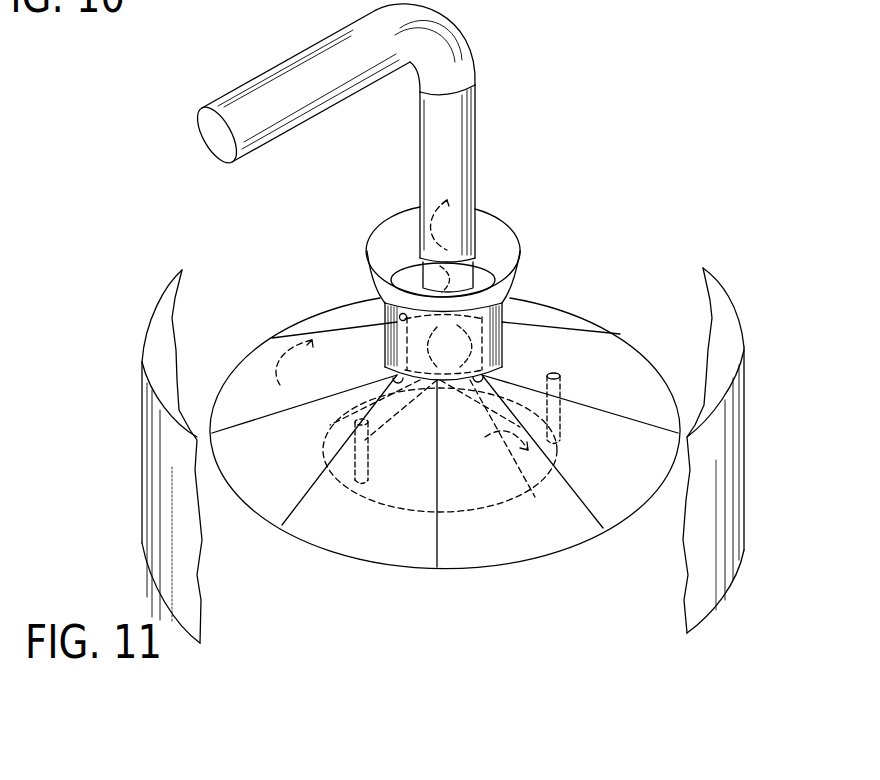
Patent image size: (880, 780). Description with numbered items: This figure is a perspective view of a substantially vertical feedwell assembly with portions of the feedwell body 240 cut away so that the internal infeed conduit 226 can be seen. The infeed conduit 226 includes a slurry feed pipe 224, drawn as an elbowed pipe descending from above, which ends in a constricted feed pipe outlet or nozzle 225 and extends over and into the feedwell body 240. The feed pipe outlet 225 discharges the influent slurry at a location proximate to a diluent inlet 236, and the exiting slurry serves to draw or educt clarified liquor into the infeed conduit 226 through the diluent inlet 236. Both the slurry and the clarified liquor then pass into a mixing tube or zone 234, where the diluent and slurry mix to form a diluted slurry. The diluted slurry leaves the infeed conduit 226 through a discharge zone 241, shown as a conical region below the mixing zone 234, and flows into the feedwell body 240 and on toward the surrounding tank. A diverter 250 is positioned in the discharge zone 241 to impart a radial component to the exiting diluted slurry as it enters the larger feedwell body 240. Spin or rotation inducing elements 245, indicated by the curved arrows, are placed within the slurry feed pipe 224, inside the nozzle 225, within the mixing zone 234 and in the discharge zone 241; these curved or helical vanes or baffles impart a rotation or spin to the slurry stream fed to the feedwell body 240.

The slurry feed pipe 224 is at (475, 52).
The infeed conduit 226 is at (467, 235).
The diluent inlet 236 is at (393, 245).
The feed pipe outlet or nozzle 225 is at (500, 300).
The mixing tube or zone 234 is at (502, 316).
The spin or rotation inducing elements 245 is at (440, 230).
The discharge zone 241 is at (318, 557).
The diverter 250 is at (352, 422).
The feedwell body 240 is at (143, 463).